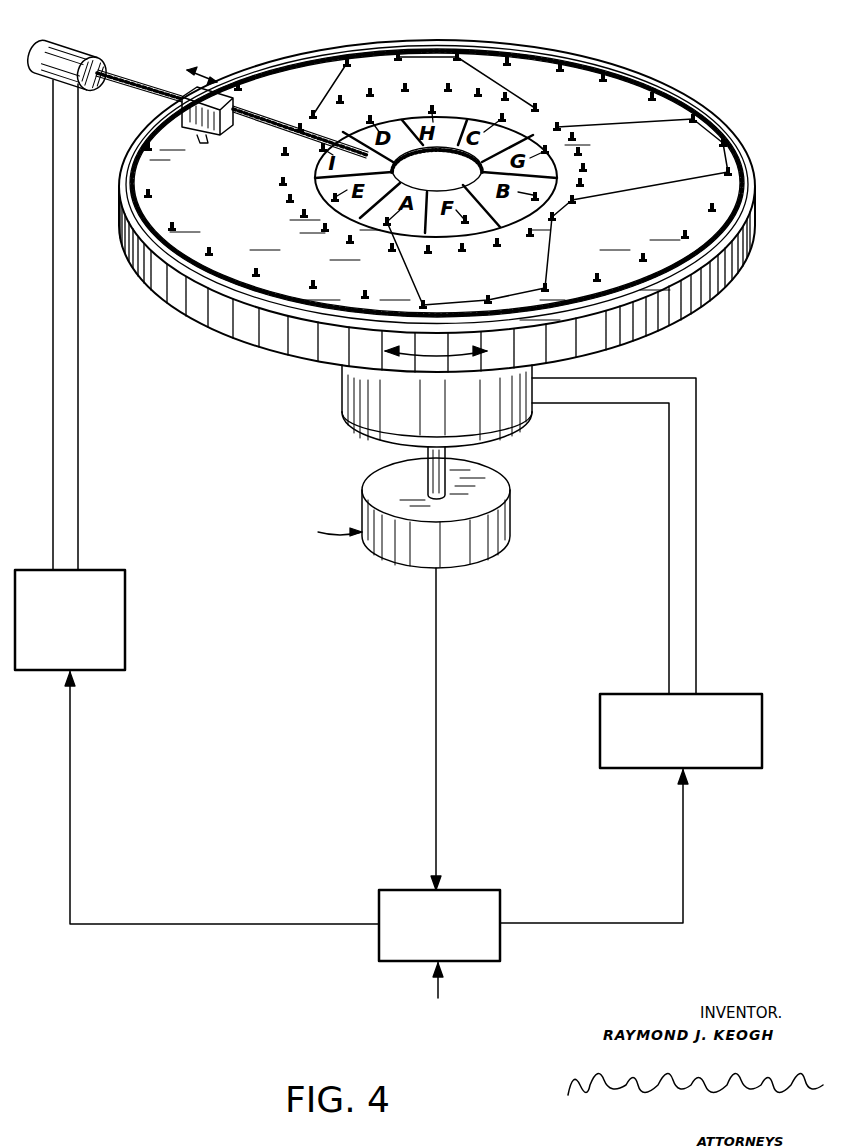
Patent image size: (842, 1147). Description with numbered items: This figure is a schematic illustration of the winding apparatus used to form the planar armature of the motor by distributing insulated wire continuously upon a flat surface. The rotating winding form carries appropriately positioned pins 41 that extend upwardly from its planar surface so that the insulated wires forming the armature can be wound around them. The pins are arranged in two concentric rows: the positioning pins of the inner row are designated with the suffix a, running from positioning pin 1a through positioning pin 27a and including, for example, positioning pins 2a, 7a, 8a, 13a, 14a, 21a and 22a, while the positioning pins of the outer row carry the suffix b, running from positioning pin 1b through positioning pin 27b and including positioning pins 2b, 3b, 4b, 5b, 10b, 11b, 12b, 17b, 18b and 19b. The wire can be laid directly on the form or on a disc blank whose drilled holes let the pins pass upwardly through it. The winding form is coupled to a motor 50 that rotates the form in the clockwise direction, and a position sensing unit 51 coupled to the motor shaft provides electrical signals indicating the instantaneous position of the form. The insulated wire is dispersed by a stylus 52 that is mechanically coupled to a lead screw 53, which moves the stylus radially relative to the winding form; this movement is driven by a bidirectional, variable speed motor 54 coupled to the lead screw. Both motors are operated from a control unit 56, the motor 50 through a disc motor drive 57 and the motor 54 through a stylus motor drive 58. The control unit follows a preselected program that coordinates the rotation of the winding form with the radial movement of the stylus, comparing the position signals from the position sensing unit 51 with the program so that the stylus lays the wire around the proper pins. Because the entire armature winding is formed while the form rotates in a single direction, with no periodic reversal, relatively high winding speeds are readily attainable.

The motor 50 is at (342, 388).
The position sensing unit 51 is at (362, 497).
The stylus 52 is at (203, 142).
The lead screw 53 is at (160, 86).
The bidirectional variable speed motor 54 is at (77, 48).
The control unit 56 is at (392, 890).
The disc motor drive 57 is at (600, 735).
The stylus motor drive 58 is at (125, 650).
The positioning pin 19b is at (348, 60).
The positioning pin 18b is at (400, 55).
The positioning pin 17b is at (460, 55).
The pins 41 is at (535, 105).
The positioning pin 14a is at (540, 110).
The positioning pin 13a is at (560, 126).
The positioning pin 12b is at (700, 117).
The positioning pin 11b is at (728, 144).
The positioning pin 10b is at (733, 172).
The positioning pin 8a is at (575, 202).
The positioning pin 7a is at (556, 218).
The positioning pin 5b is at (548, 286).
The positioning pin 4b is at (490, 298).
The positioning pin 3b is at (425, 303).
The positioning pin 2b is at (378, 283).
The positioning pin 2a is at (389, 248).
The positioning pin 1a is at (347, 241).
The positioning pin 1b is at (320, 270).
The positioning pin 27a is at (322, 229).
The positioning pin 27b is at (258, 271).
The positioning pin 21a is at (313, 113).
The positioning pin 22a is at (299, 126).